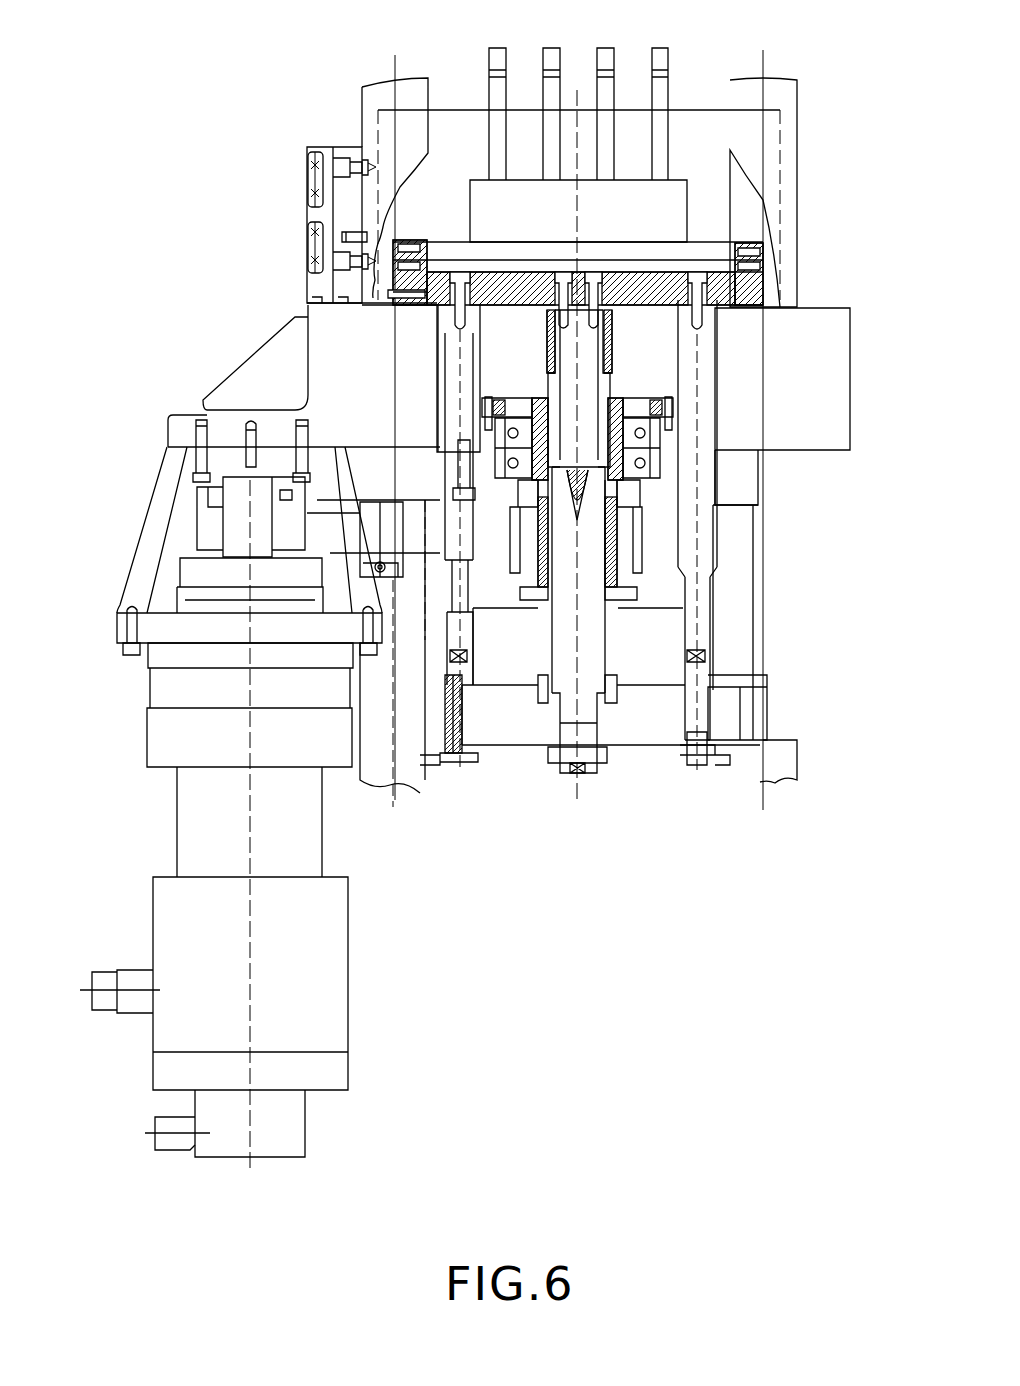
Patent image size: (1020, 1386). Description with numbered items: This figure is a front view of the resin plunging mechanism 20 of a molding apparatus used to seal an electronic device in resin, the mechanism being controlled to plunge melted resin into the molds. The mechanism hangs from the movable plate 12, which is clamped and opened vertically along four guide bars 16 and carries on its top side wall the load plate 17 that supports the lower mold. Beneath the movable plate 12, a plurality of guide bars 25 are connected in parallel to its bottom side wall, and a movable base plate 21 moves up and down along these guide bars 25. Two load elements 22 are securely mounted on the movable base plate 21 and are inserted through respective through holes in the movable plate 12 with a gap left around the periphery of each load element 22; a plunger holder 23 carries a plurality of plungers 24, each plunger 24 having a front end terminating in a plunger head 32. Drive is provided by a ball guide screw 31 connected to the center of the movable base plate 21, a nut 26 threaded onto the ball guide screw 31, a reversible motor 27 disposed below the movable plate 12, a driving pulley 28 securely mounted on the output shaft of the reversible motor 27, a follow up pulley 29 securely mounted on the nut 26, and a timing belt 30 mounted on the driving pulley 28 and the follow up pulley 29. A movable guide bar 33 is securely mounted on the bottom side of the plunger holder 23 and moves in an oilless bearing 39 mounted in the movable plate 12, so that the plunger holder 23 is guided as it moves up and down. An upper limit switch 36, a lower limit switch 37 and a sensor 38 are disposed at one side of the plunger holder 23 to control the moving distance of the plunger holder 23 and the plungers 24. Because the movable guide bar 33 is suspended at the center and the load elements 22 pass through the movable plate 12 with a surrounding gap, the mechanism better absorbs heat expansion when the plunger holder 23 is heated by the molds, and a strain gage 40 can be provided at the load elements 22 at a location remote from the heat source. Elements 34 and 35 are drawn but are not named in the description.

The movable plate 12 is at (347, 353).
The guide bars 16 is at (782, 97).
The load plate 17 is at (697, 160).
The resin plunging mechanism 20 is at (696, 597).
The movable base plate 21 is at (633, 730).
The load elements 22 is at (705, 487).
The plunger holder 23 is at (680, 255).
The plungers 24 is at (660, 158).
The guide bars 25 is at (737, 578).
The nut 26 is at (618, 565).
The reversible motor 27 is at (167, 928).
The driving pulley 28 is at (207, 527).
The follow up pulley 29 is at (637, 538).
The timing belt 30 is at (315, 528).
The ball guide screw 31 is at (592, 650).
The plunger head 32 is at (657, 85).
The movable guide bar 33 is at (607, 343).
The spindle body 34 is at (583, 402).
The bearing 35 is at (625, 430).
The upper limit switch 36 is at (342, 165).
The lower limit switch 37 is at (340, 260).
The sensor 38 is at (352, 233).
The oilless bearing 39 is at (782, 305).
The strain gage 40 is at (705, 598).